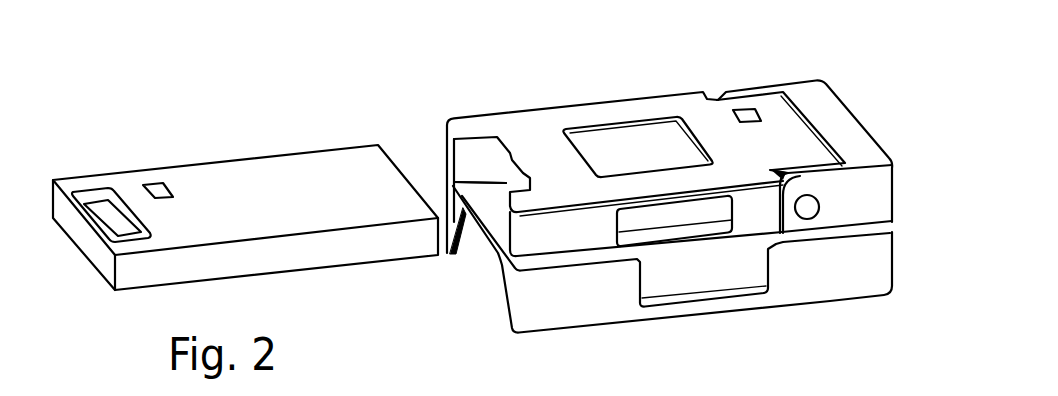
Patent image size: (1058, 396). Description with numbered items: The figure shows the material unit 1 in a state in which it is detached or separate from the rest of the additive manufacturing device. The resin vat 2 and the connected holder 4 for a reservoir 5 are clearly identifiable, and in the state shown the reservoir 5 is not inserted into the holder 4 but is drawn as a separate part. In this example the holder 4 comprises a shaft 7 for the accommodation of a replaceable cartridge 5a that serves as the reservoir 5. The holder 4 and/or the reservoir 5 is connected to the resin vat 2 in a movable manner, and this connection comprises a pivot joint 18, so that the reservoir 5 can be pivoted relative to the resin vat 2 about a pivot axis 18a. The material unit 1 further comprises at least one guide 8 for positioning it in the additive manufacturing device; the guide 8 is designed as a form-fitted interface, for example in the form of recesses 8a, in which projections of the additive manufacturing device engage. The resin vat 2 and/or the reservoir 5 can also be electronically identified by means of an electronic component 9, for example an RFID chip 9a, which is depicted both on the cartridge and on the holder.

The material unit 1 is at (646, 199).
The resin vat 2 is at (532, 290).
The holder 4 is at (543, 155).
The reservoir 5 is at (245, 184).
The replaceable cartridge 5a is at (270, 193).
The shaft 7 is at (480, 186).
The guide 8 is at (450, 281).
The recesses 8a is at (458, 256).
The electronic component 9 is at (423, 99).
The RFID chip 9a is at (155, 192).
The pivot joint 18 is at (842, 290).
The pivot axis 18a is at (808, 213).